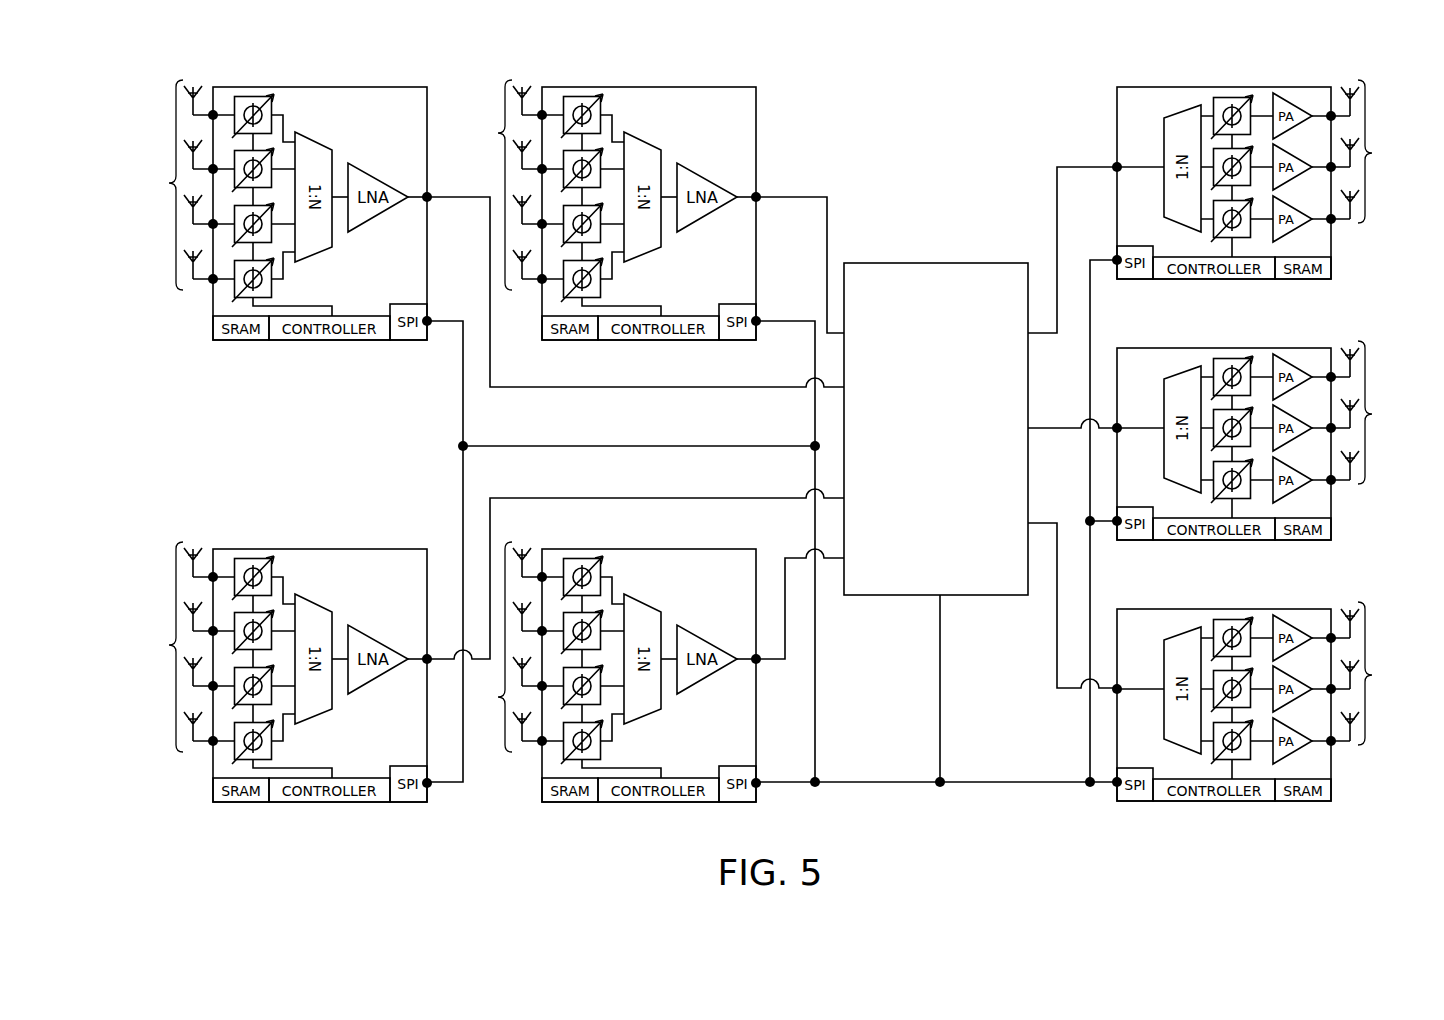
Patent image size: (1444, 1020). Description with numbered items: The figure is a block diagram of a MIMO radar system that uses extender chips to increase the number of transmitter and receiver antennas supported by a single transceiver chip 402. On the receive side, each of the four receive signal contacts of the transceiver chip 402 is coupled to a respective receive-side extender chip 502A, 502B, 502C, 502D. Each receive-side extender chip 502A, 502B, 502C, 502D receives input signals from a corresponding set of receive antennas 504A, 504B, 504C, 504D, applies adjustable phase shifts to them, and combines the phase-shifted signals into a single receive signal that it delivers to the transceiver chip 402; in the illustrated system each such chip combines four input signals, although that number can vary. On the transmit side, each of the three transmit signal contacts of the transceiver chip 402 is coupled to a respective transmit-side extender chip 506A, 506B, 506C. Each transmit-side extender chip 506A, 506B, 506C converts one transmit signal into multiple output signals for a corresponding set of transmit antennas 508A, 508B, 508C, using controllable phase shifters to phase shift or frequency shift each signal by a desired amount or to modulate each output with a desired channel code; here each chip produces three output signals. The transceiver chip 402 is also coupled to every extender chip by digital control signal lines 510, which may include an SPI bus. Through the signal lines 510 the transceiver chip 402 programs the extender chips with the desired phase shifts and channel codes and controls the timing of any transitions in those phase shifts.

The transceiver chip 402 is at (948, 263).
The receive-side extender chip 502A is at (620, 87).
The receive-side extender chip 502B is at (305, 87).
The receive-side extender chip 502C is at (297, 802).
The receive-side extender chip 502D is at (647, 802).
The set of receive antennas 504A is at (498, 133).
The set of receive antennas 504B is at (169, 183).
The set of receive antennas 504C is at (169, 645).
The set of receive antennas 504D is at (498, 697).
The transmit-side extender chip 506A is at (1205, 87).
The transmit-side extender chip 506B is at (1205, 348).
The transmit-side extender chip 506C is at (1205, 609).
The set of transmit antennas 508A is at (1372, 153).
The set of transmit antennas 508B is at (1372, 414).
The set of transmit antennas 508C is at (1372, 675).
The digital control signal lines 510 is at (958, 782).